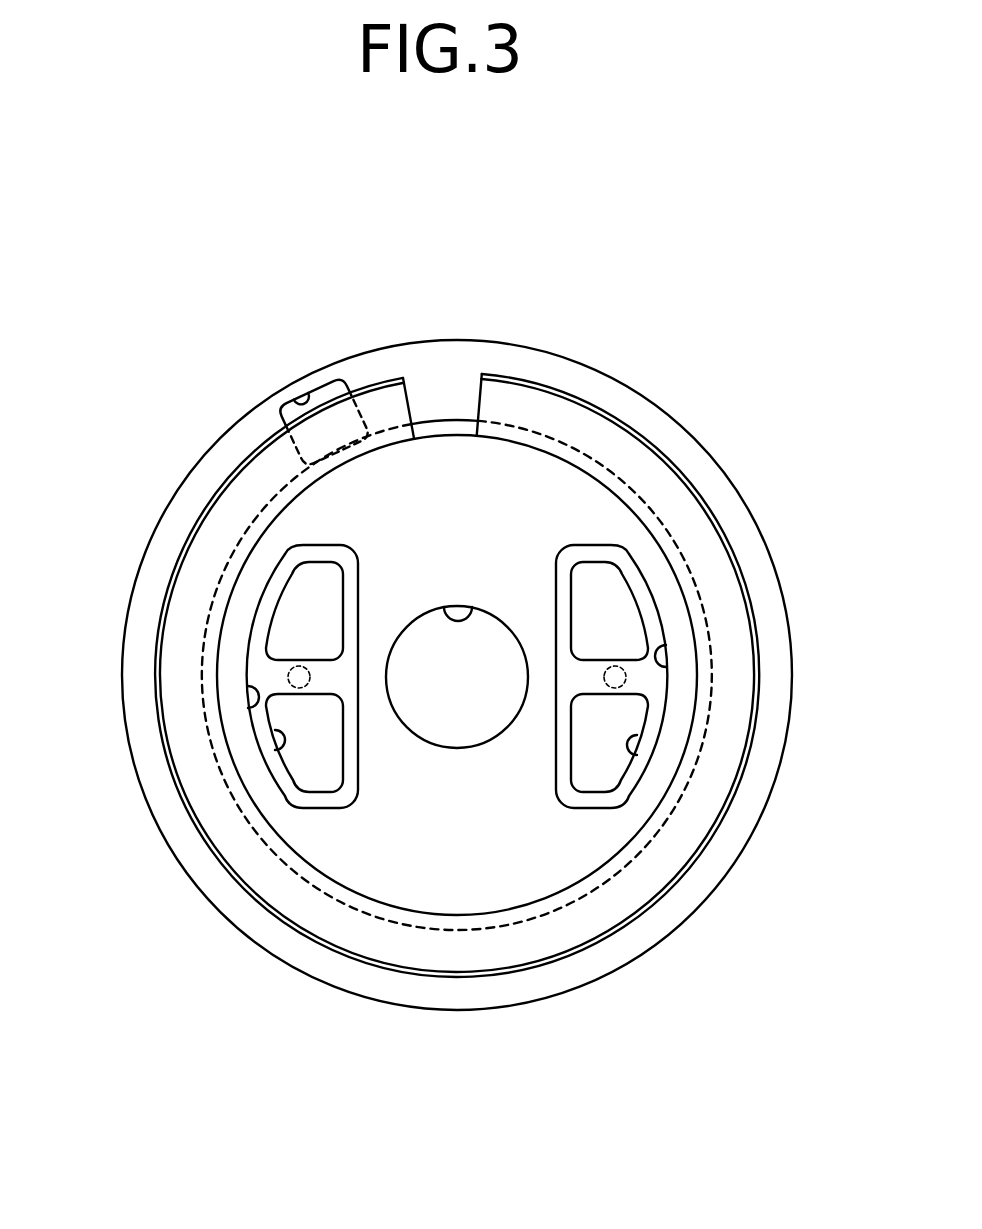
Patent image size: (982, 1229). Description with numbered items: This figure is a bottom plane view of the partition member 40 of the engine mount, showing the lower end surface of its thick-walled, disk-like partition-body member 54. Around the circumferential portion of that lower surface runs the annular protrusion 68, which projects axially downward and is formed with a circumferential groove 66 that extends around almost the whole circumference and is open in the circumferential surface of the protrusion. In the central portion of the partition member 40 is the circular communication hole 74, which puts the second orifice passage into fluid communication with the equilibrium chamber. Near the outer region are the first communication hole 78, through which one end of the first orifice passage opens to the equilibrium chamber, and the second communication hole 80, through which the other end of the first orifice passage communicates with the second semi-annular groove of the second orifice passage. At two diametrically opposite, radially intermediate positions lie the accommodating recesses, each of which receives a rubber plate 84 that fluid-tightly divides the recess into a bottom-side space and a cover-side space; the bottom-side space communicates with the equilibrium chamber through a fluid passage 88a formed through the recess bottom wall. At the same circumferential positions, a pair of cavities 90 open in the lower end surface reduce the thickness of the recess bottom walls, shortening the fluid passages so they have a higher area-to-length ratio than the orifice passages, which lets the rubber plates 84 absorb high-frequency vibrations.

The partition member 40 is at (700, 372).
The partition-body member 54 is at (588, 838).
The circumferential groove 66 is at (613, 878).
The annular protrusion 68 is at (285, 893).
The communication hole 74 is at (472, 607).
The first communication hole 78 is at (482, 400).
The second communication hole 80 is at (297, 398).
The rubber plate 84 is at (290, 608).
The fluid passage 88a is at (281, 749).
The cavity 90 is at (257, 700).